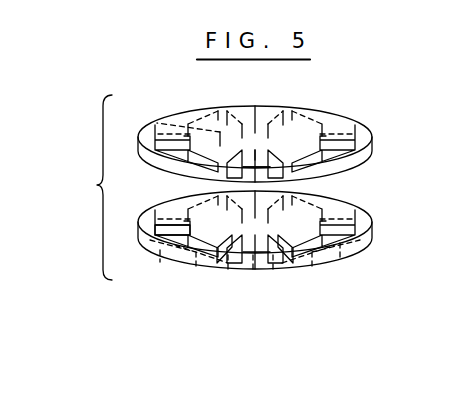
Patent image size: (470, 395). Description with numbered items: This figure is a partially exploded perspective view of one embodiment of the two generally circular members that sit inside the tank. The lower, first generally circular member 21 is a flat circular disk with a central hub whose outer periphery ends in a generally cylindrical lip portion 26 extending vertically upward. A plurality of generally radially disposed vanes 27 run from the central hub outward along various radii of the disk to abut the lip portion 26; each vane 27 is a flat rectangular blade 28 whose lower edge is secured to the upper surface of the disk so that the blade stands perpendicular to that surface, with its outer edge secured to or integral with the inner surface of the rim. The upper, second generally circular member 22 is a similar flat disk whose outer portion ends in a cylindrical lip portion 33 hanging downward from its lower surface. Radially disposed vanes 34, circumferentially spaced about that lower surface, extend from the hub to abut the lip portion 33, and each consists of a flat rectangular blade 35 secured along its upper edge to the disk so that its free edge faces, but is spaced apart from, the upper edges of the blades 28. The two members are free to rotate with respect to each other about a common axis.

The first generally circular member 21 is at (377, 220).
The second generally circular member 22 is at (379, 128).
The cylindrical lip portion 26 is at (361, 248).
The radially disposed vanes 27 is at (159, 221).
The rectangular blade 28 is at (273, 248).
The cylindrical lip portion 33 is at (268, 104).
The radially disposed vanes 34 is at (232, 91).
The rectangular blade 35 is at (322, 137).